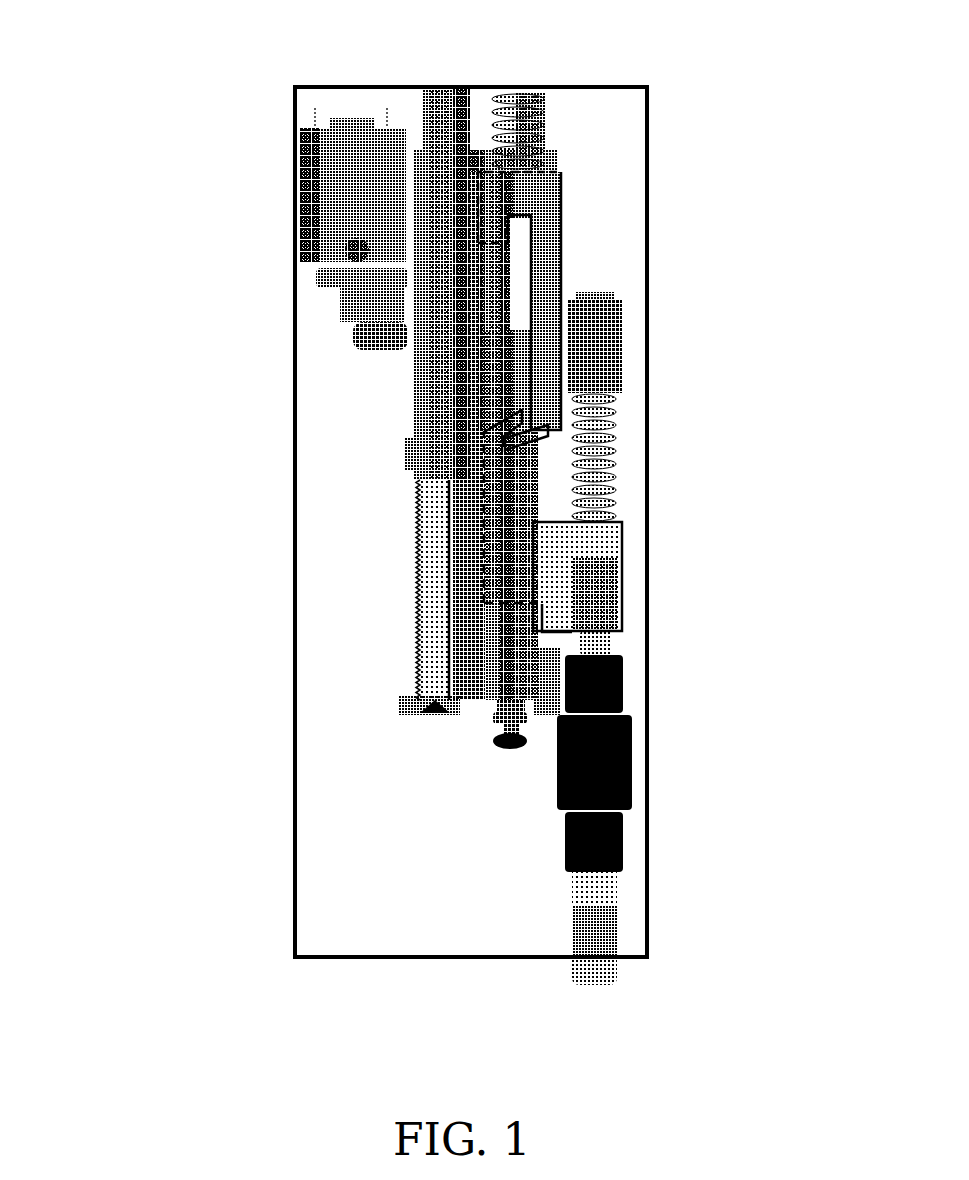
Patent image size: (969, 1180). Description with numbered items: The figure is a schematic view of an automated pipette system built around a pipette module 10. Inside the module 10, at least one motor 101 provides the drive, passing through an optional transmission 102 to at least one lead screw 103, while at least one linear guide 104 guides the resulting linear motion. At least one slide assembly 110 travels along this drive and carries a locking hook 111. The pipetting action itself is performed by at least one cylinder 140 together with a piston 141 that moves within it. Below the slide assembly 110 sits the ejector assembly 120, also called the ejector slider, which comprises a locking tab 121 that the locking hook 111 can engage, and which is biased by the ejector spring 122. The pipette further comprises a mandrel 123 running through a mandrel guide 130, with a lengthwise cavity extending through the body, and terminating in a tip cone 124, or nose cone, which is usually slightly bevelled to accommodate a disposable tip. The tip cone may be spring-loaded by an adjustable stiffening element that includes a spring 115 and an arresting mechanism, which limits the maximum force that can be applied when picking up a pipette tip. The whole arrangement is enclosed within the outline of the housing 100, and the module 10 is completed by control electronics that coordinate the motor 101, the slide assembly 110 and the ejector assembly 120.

The module 10 is at (205, 113).
The housing 100 is at (293, 776).
The motor 101 is at (320, 206).
The transmission 102 is at (350, 303).
The lead screw 103 is at (415, 522).
The linear guide 104 is at (458, 107).
The slide assembly 110 is at (567, 238).
The locking hook 111 is at (550, 440).
The spring 115 is at (538, 118).
The ejector assembly 120 is at (625, 617).
The locking tab 121 is at (500, 418).
The ejector spring 122 is at (612, 495).
The mandrel 123 is at (625, 915).
The tip cone 124 is at (620, 975).
The mandrel guide 130 is at (625, 848).
The cylinder 140 is at (480, 573).
The piston 141 is at (493, 369).